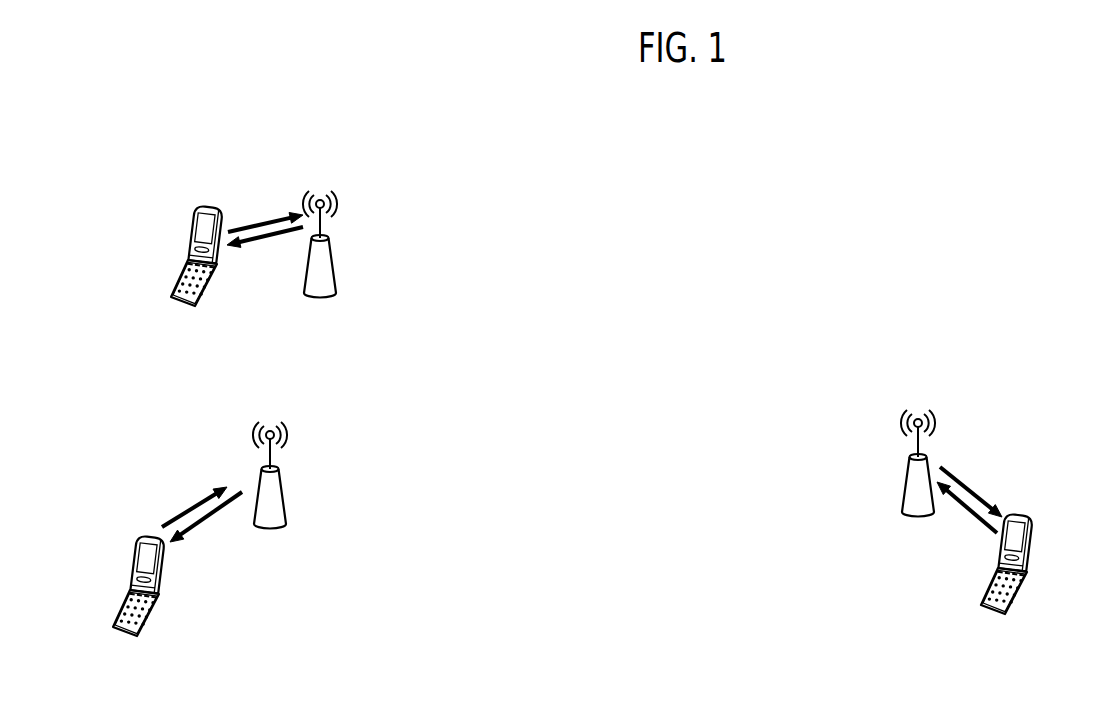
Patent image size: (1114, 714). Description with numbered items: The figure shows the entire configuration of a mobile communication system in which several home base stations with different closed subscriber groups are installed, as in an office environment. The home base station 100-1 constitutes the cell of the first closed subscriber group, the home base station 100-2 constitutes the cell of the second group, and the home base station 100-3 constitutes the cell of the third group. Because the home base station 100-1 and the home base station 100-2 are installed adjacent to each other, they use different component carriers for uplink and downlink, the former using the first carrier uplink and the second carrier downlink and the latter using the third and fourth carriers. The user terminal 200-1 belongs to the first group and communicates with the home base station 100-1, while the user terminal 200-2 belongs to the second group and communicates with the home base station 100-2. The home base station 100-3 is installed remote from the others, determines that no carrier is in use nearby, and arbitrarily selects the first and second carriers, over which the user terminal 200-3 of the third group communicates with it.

The home base station (HeNB) 100-1 is at (279, 478).
The home base station (HeNB) 100-2 is at (333, 247).
The home base station (HeNB) 100-3 is at (929, 462).
The user terminal (UE) 200-1 is at (148, 535).
The user terminal (UE) 200-2 is at (207, 203).
The user terminal (UE) 200-3 is at (1026, 513).